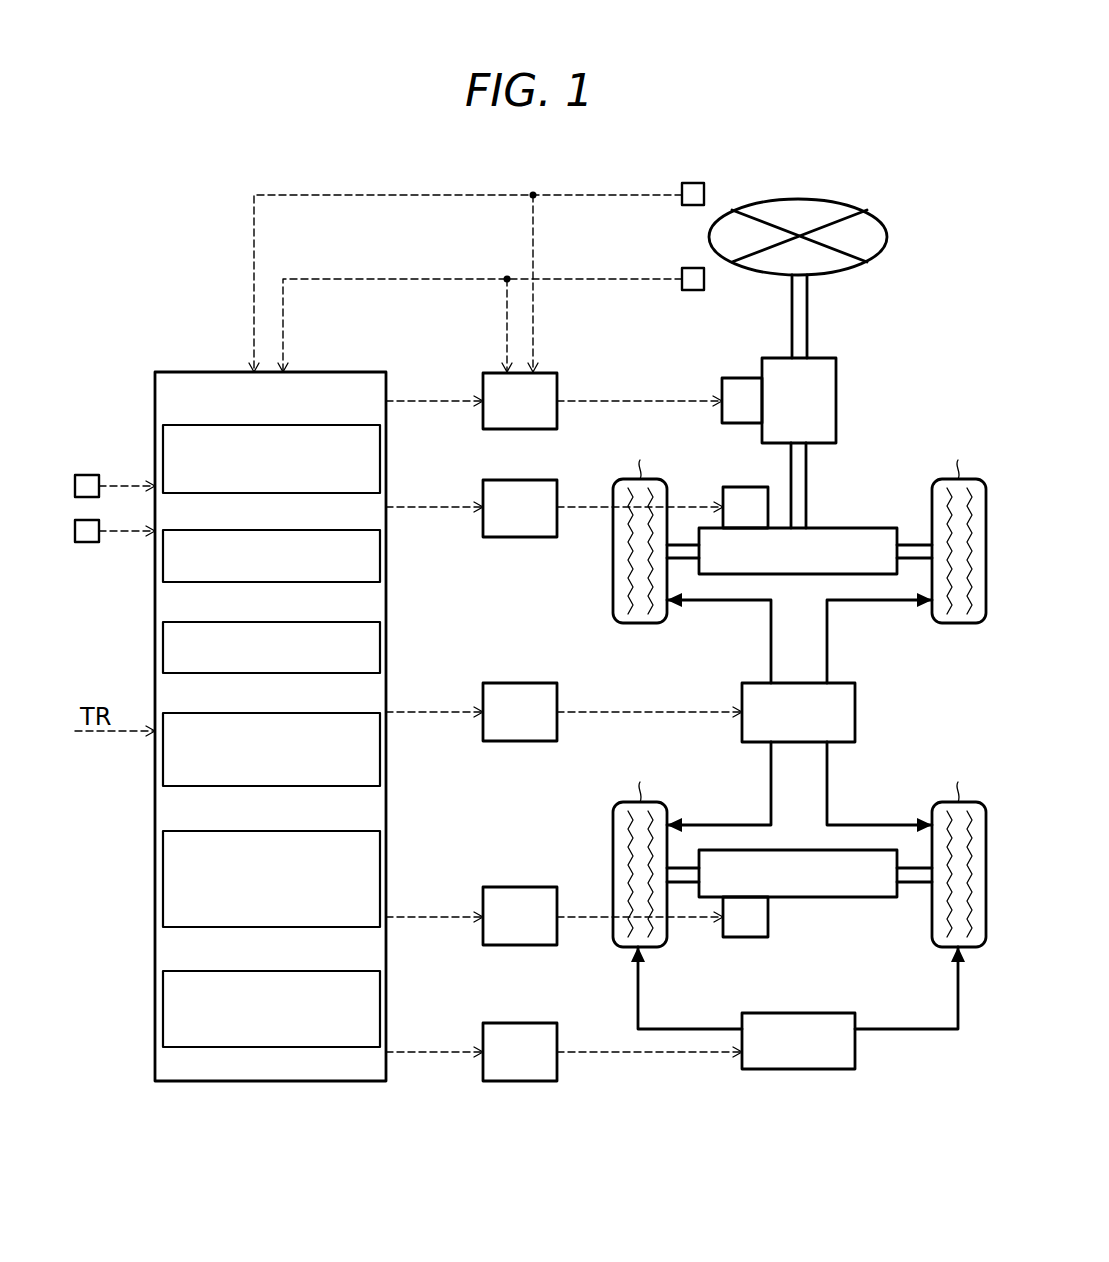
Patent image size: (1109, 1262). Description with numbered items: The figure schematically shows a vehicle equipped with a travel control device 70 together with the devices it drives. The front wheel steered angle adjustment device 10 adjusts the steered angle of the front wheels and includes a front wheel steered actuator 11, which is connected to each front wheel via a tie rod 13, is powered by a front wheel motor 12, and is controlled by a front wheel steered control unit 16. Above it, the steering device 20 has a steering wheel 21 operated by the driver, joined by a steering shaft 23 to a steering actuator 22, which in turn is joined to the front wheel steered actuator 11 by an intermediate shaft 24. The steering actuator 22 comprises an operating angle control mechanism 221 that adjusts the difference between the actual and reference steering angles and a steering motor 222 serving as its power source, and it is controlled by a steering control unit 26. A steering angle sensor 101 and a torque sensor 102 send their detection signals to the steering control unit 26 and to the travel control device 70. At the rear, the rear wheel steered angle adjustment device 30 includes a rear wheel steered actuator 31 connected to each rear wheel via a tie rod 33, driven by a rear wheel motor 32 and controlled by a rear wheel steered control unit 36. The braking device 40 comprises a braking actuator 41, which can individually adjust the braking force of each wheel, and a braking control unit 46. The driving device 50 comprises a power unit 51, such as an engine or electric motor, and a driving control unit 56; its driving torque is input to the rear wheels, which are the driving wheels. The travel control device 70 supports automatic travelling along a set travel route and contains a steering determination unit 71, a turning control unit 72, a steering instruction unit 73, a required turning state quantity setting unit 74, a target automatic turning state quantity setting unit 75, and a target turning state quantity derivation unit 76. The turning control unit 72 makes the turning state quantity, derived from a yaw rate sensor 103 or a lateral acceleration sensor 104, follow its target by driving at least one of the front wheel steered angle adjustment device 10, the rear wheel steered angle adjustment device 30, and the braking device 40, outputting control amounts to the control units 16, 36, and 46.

The front wheel steered angle adjustment device 10 is at (886, 488).
The front wheel steered actuator 11 is at (797, 574).
The front wheel motor 12 is at (743, 486).
The tie rod 13 is at (915, 540).
The front wheel steered control unit 16 is at (543, 480).
The steering device 20 is at (910, 213).
The steering wheel 21 is at (797, 198).
The steering actuator 22 is at (893, 325).
The operating angle control mechanism 221 is at (836, 403).
The steering motor 222 is at (742, 377).
The steering shaft 23 is at (792, 290).
The intermediate shaft 24 is at (808, 497).
The steering control unit 26 is at (555, 373).
The rear wheel steered angle adjustment device 30 is at (871, 928).
The rear wheel steered actuator 31 is at (797, 850).
The rear wheel motor 32 is at (768, 916).
The tie rod 33 is at (915, 882).
The rear wheel steered control unit 36 is at (543, 887).
The braking device 40 is at (917, 696).
The braking actuator 41 is at (855, 712).
The braking control unit 46 is at (543, 683).
The driving device 50 is at (863, 1090).
The power unit 51 is at (812, 1013).
The driving control unit 56 is at (543, 1023).
The travel control device 70 is at (325, 372).
The steering determination unit 71 is at (289, 425).
The turning control unit 72 is at (289, 530).
The steering instruction unit 73 is at (289, 622).
The required turning state quantity setting unit 74 is at (289, 713).
The target automatic turning state quantity setting unit 75 is at (289, 831).
The target turning state quantity derivation unit 76 is at (289, 971).
The steering angle sensor 101 is at (693, 183).
The torque sensor 102 is at (693, 292).
The yaw rate sensor 103 is at (87, 475).
The lateral acceleration sensor 104 is at (87, 545).